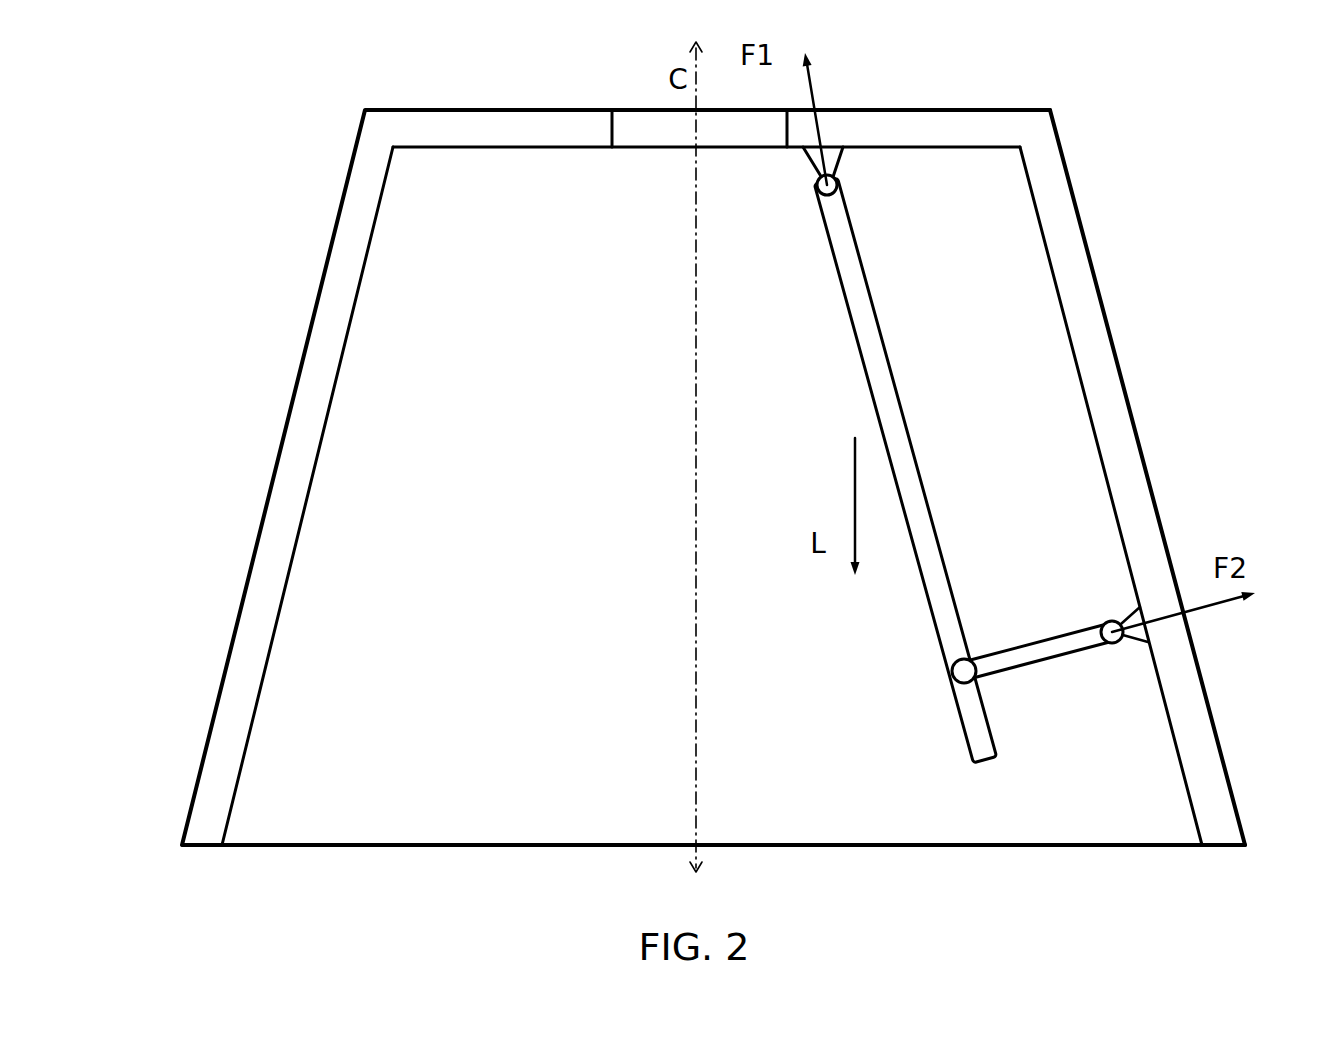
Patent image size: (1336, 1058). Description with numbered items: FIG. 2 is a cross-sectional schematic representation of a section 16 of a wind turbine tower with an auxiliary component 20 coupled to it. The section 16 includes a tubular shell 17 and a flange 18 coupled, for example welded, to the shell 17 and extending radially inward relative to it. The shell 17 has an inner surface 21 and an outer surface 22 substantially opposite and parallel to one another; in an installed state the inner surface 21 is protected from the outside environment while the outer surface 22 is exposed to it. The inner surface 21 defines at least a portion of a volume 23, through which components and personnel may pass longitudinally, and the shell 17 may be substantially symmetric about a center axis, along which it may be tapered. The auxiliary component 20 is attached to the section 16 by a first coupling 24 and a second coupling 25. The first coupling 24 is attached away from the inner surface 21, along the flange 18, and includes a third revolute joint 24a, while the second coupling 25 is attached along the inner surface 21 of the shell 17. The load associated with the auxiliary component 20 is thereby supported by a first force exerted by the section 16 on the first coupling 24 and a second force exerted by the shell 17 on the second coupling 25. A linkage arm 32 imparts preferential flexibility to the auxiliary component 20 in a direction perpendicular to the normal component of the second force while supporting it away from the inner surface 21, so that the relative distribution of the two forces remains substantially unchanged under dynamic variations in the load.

The section 16 is at (258, 210).
The shell 17 is at (288, 380).
The flange 18 is at (922, 96).
The auxiliary component 20 is at (812, 316).
The inner surface 21 is at (1190, 795).
The outer surface 22 is at (1213, 710).
The volume 23 is at (405, 648).
The first coupling 24 is at (818, 160).
The third revolute joint 24a is at (837, 174).
The second coupling 25 is at (1138, 610).
The linkage arm 32 is at (1016, 633).